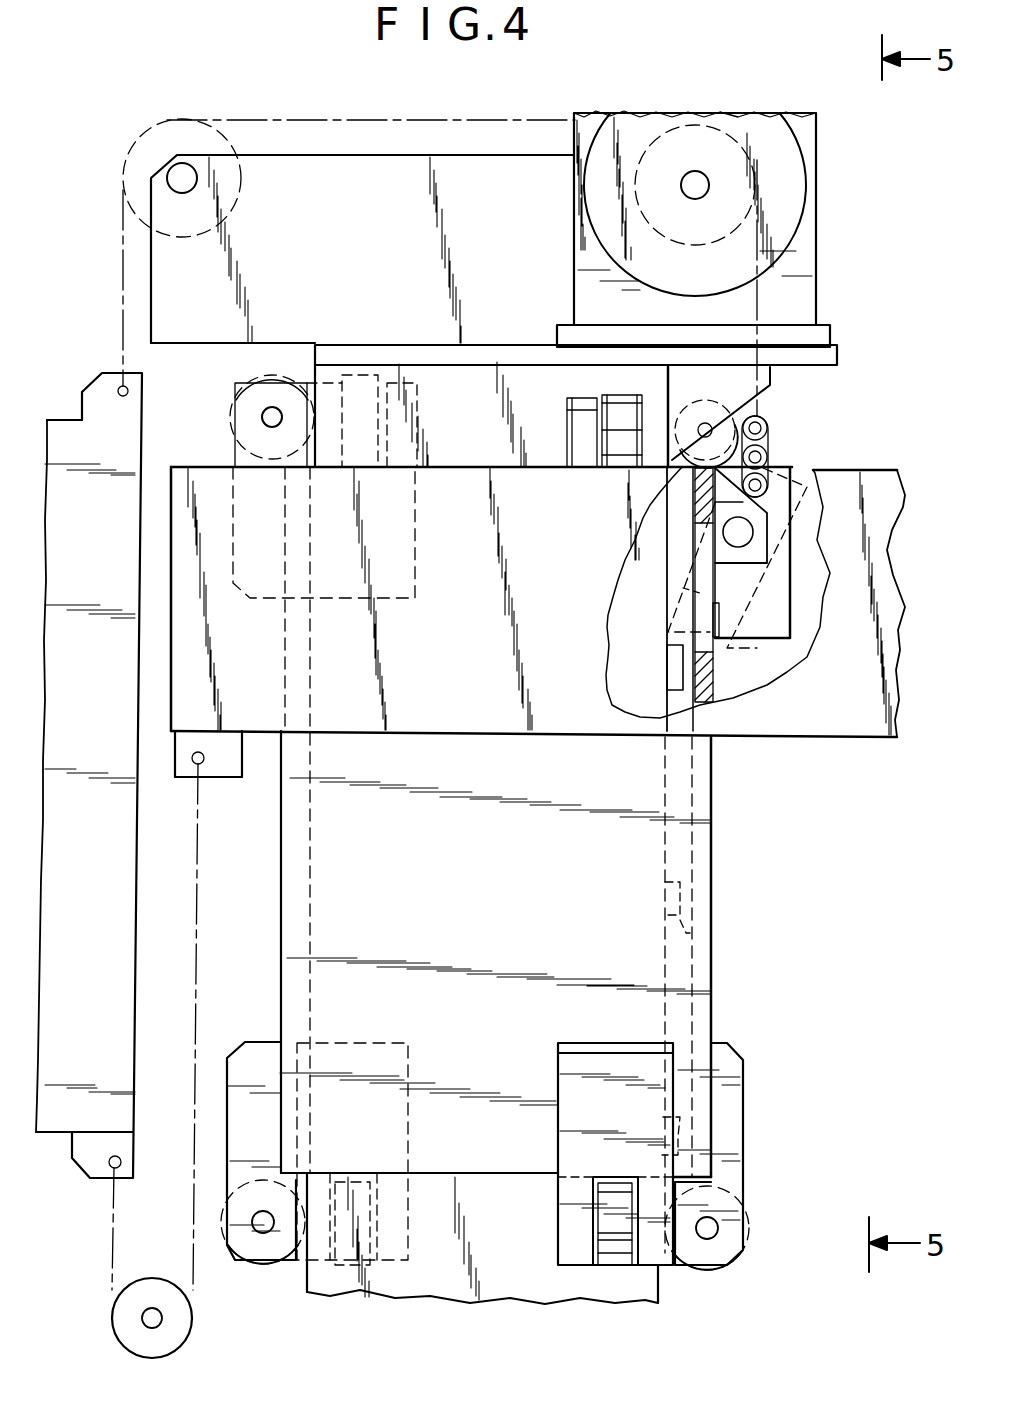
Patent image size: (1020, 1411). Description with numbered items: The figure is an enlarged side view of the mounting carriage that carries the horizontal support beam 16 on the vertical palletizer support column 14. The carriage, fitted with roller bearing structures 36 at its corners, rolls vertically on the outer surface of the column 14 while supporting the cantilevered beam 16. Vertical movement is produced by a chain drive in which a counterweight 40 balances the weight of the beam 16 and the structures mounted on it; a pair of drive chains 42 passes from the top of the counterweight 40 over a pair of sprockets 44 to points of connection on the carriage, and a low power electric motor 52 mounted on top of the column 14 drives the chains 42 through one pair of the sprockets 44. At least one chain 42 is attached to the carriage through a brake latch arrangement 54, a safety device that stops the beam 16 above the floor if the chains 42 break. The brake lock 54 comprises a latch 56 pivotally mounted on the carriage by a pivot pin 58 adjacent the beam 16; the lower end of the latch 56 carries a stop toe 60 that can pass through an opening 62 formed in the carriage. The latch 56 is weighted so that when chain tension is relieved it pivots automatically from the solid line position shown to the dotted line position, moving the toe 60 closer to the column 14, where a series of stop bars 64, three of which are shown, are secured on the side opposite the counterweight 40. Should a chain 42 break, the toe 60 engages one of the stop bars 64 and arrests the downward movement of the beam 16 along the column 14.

The palletizer support column 14 is at (665, 850).
The horizontal support beam 16 is at (866, 716).
The roller bearing structures 36 is at (712, 880).
The counterweight 40 is at (113, 842).
The drive chains 42 is at (772, 430).
The sprockets 44 is at (180, 118).
The motor 52 is at (784, 157).
The brake latch arrangement 54 is at (790, 463).
The latch 56 is at (772, 600).
The pivot pin 58 is at (755, 540).
The stop toe 60 is at (722, 620).
The opening 62 is at (716, 676).
The stop bars 64 is at (670, 667).